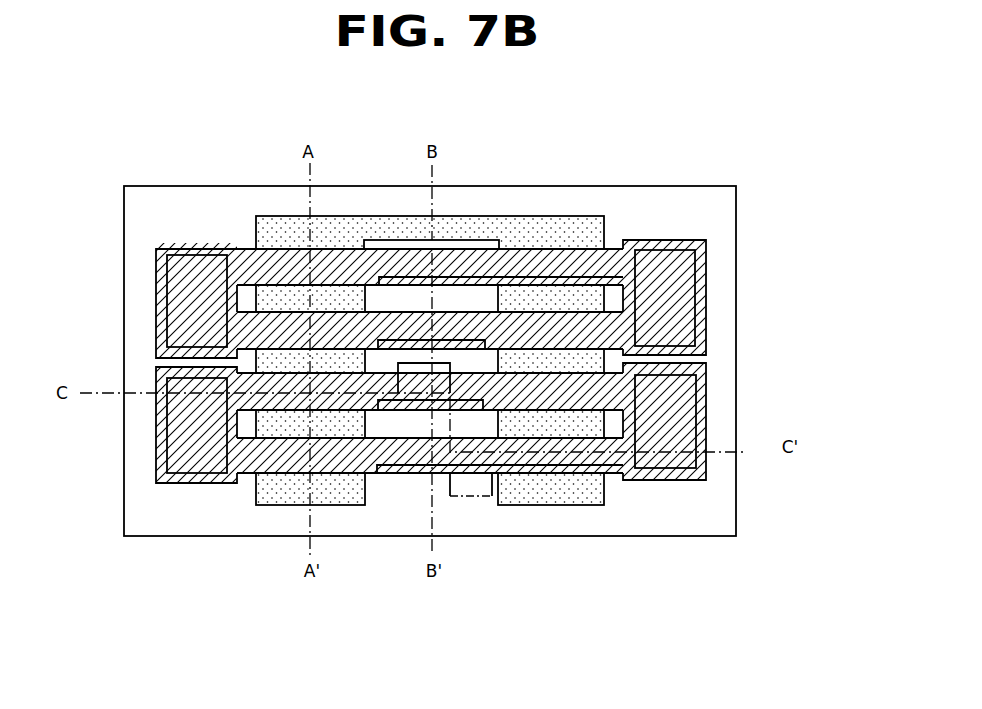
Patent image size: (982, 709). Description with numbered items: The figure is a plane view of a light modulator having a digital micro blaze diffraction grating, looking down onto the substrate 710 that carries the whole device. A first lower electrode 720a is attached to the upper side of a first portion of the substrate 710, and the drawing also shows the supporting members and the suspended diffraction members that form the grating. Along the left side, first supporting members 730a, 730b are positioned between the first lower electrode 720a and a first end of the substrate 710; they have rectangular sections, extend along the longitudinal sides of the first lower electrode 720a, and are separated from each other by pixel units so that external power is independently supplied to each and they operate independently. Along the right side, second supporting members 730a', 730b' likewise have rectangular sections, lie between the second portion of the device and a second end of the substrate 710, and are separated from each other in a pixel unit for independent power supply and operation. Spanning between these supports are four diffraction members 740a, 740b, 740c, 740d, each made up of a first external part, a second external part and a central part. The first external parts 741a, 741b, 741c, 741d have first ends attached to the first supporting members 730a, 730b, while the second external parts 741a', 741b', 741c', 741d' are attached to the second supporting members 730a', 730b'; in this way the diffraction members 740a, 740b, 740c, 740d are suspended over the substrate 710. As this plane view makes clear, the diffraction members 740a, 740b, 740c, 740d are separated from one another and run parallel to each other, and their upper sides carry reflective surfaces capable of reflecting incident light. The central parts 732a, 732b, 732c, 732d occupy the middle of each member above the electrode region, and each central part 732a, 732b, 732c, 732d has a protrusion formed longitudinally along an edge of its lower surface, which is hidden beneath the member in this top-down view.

The substrate 710 is at (726, 505).
The first lower electrode 720a is at (292, 507).
The first supporting member 730a is at (129, 425).
The second supporting member 730a' is at (736, 421).
The first supporting member 730b is at (128, 300).
The second supporting member 730b' is at (736, 297).
The central part 732a is at (458, 478).
The central part 732b is at (498, 475).
The central part 732c is at (477, 317).
The central part 732d is at (448, 256).
The diffraction member 740a is at (393, 477).
The diffraction member 740b is at (350, 420).
The diffraction member 740c is at (350, 303).
The diffraction member 740d is at (393, 247).
The first external part 741a is at (257, 524).
The second external part 741a' is at (612, 522).
The first external part 741b is at (382, 491).
The second external part 741b' is at (647, 489).
The first external part 741c is at (381, 233).
The second external part 741c' is at (646, 201).
The first external part 741d is at (417, 201).
The second external part 741d' is at (608, 233).